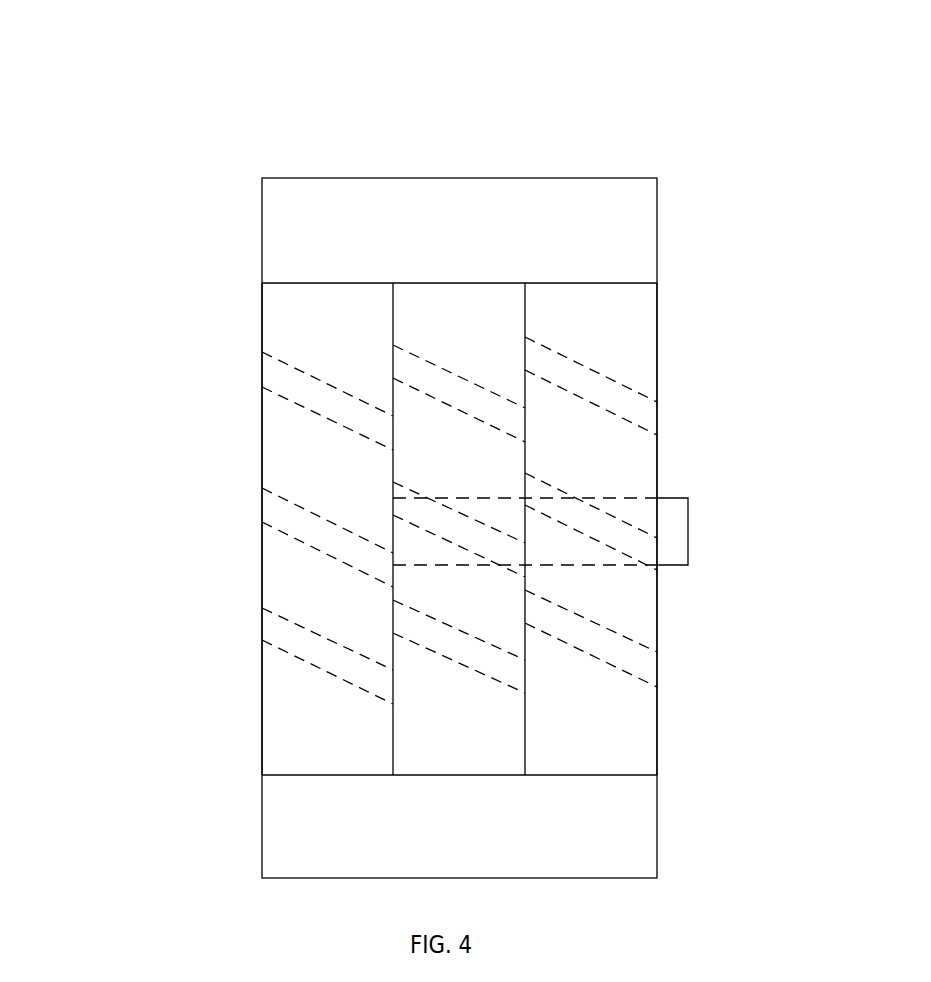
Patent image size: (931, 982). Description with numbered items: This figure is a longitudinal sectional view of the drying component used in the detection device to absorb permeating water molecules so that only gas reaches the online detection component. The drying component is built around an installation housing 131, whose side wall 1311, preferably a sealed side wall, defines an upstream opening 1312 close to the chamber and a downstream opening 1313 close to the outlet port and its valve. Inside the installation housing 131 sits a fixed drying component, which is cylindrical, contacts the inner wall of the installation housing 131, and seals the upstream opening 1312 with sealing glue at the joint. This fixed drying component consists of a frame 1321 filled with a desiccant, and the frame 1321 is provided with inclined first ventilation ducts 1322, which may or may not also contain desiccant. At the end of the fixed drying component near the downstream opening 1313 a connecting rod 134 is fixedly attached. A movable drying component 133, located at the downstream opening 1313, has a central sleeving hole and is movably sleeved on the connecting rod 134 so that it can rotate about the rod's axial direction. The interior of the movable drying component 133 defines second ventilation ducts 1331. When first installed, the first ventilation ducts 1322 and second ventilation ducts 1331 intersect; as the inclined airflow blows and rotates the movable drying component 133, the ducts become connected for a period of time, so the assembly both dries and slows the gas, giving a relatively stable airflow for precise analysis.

The installation housing 131 is at (473, 218).
The side wall 1311 is at (368, 183).
The upstream opening 1312 is at (260, 733).
The downstream opening 1313 is at (657, 722).
The frame 1321 is at (295, 305).
The first ventilation ducts 1322 is at (330, 418).
The movable drying component 133 is at (632, 320).
The second ventilation ducts 1331 is at (607, 376).
The connecting rod 134 is at (688, 565).